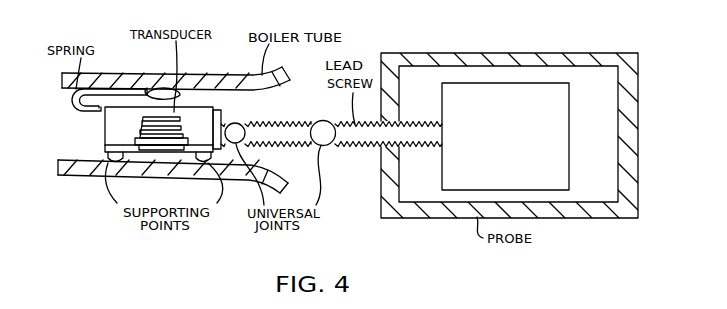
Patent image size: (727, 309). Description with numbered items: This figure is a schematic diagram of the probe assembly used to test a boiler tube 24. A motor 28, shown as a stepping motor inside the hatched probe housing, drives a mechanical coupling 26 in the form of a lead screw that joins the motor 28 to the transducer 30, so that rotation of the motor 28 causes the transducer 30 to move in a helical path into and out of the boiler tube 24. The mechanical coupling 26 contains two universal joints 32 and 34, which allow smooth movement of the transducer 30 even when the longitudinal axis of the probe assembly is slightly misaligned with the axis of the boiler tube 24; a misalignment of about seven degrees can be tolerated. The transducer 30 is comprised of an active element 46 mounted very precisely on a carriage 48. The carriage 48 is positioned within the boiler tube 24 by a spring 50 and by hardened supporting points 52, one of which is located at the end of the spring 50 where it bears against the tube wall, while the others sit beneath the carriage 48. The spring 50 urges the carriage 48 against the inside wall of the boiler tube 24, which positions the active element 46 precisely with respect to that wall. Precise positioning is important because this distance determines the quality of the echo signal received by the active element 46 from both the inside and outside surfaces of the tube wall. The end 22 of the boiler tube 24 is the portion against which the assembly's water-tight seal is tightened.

The end of the boiler tube 22 is at (288, 84).
The boiler tube 24 is at (214, 80).
The mechanical coupling 26 is at (296, 121).
The motor 28 is at (442, 91).
The transducer 30 is at (105, 128).
The universal joint 32 is at (232, 122).
The universal joint 34 is at (315, 121).
The active element 46 is at (140, 130).
The carriage 48 is at (104, 146).
The spring 50 is at (74, 100).
The supporting points 52 is at (162, 88).